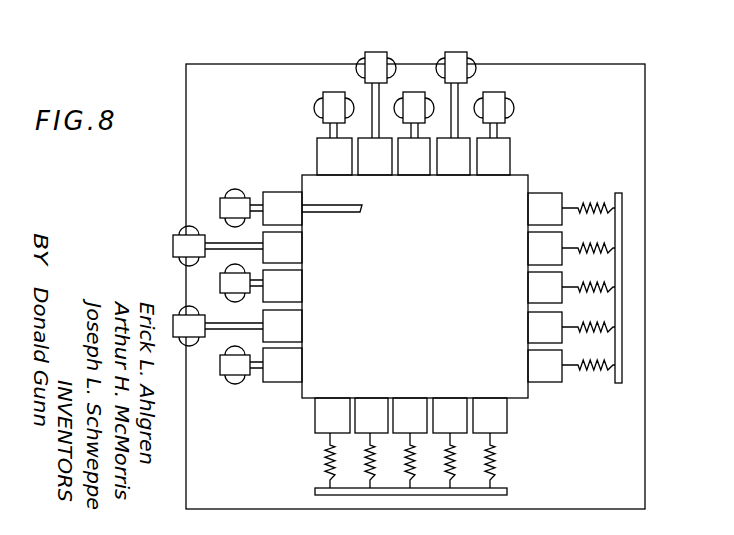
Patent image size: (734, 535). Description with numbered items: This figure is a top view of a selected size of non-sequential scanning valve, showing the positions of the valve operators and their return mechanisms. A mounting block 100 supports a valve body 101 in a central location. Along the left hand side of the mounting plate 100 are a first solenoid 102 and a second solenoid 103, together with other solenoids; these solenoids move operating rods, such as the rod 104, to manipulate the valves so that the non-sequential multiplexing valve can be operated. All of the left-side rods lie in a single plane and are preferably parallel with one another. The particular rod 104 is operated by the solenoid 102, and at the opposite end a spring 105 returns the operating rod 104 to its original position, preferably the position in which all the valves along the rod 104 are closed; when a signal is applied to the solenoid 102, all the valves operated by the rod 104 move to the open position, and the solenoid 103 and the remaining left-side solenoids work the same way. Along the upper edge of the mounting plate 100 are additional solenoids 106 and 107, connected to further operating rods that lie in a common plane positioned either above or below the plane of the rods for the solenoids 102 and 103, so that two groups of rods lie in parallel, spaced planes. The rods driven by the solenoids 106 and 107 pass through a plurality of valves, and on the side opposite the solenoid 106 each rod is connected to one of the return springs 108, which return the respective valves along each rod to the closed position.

The mounting block 100 is at (605, 64).
The valve body 101 is at (440, 290).
The first solenoid 102 is at (223, 193).
The second solenoid 103 is at (173, 236).
The operating rod 104 is at (338, 213).
The spring 105 is at (580, 203).
The additional solenoid 106 is at (318, 101).
The additional solenoid 107 is at (373, 52).
The return springs 108 is at (327, 462).